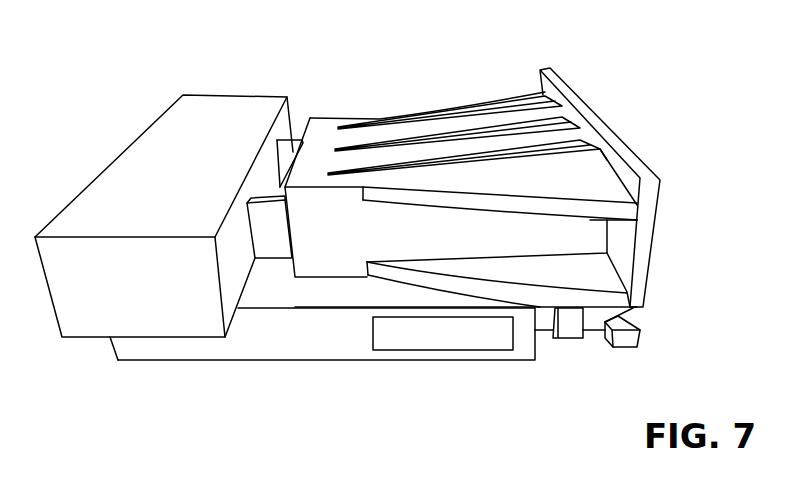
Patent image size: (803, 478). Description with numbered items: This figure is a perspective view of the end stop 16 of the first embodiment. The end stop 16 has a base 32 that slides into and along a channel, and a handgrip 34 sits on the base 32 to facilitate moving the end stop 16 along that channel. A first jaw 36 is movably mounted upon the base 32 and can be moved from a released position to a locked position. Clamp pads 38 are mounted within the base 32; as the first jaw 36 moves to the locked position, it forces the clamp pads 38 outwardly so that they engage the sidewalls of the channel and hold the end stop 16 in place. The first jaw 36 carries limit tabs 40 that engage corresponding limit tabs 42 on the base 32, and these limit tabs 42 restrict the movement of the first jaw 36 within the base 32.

The end stop 16 is at (118, 113).
The base 32 is at (127, 348).
The handgrip 34 is at (233, 108).
The first jaw 36 is at (470, 112).
The clamp pads 38 is at (392, 340).
The limit tabs 40 is at (565, 337).
The limit tabs 42 is at (638, 340).